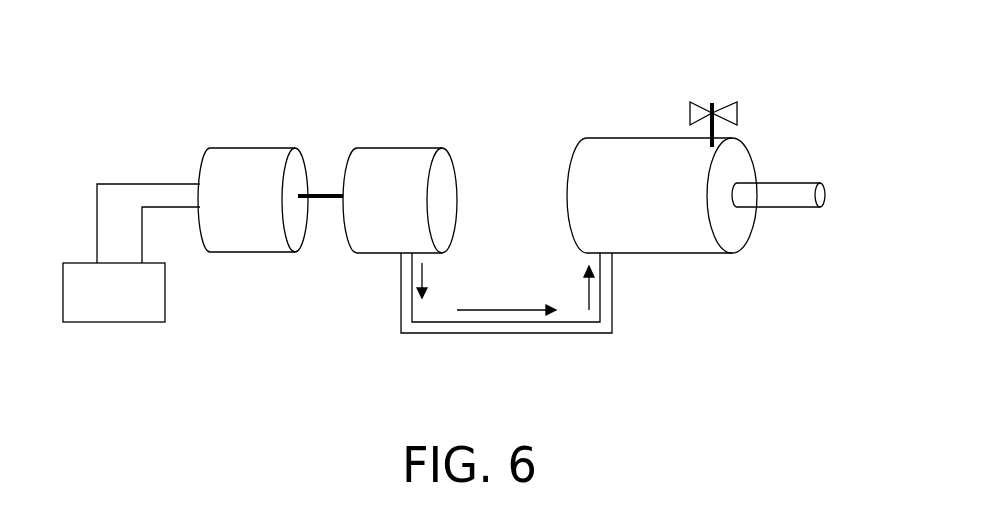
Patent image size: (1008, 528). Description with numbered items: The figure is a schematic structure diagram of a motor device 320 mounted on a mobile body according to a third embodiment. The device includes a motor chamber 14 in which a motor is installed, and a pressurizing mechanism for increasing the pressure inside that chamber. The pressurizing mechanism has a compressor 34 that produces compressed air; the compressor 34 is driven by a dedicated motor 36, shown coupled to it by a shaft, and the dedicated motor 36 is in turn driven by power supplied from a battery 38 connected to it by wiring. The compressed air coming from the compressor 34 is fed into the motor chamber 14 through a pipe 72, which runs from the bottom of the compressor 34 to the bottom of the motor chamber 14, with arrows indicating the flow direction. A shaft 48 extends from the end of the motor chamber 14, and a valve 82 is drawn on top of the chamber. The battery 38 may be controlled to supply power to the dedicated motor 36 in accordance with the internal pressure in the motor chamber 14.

The motor device 320 is at (515, 66).
The motor chamber 14 is at (610, 138).
The compressor 34 is at (412, 148).
The dedicated motor 36 is at (267, 148).
The battery 38 is at (130, 322).
The compressed air outlet shaft 48 is at (805, 207).
The pipe 72 is at (613, 310).
The valve 82 is at (737, 113).